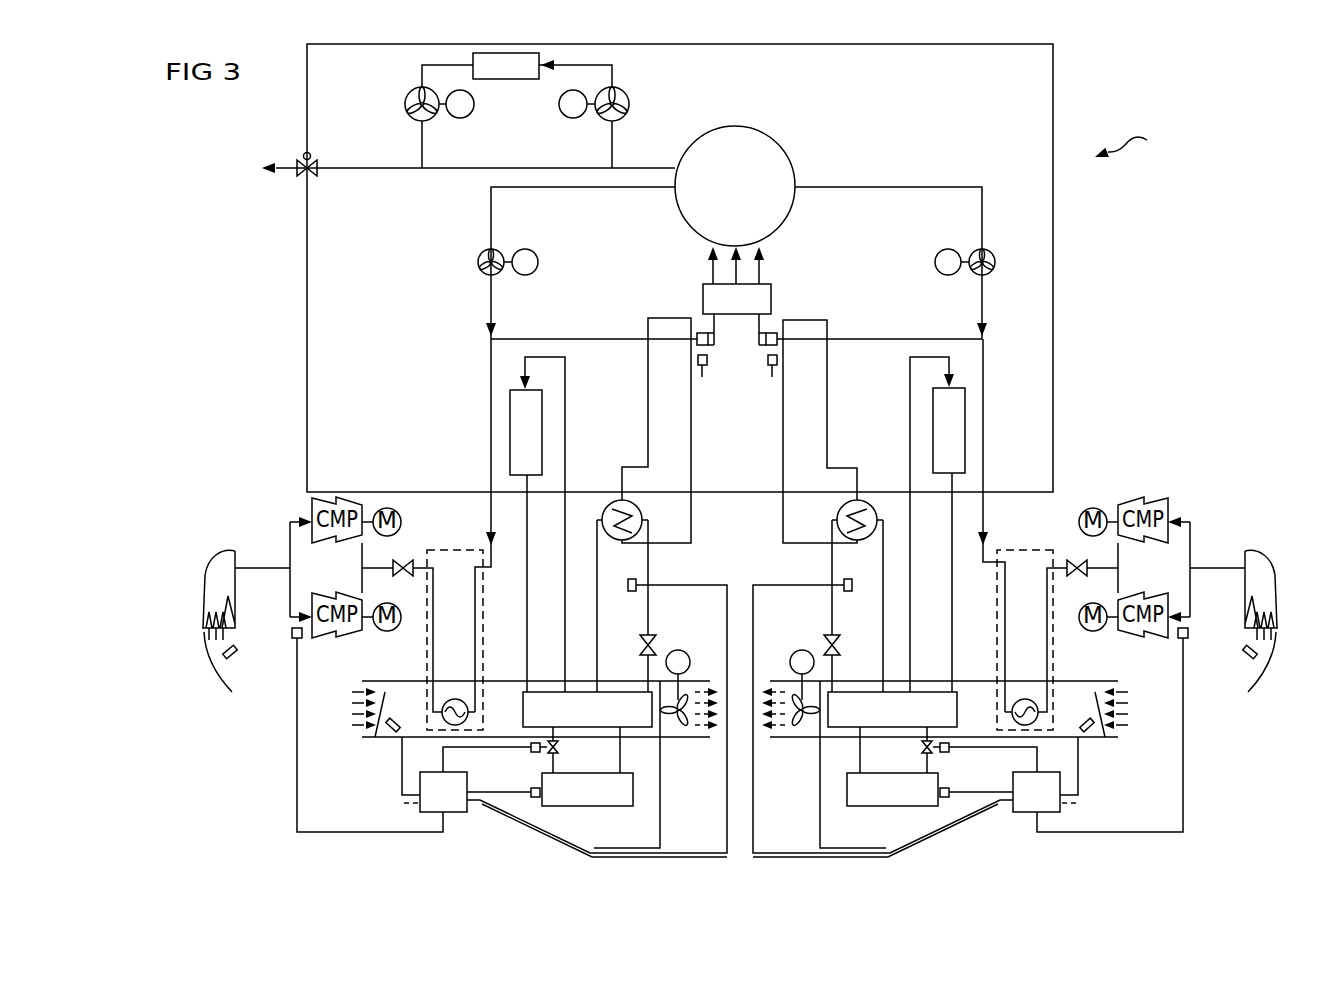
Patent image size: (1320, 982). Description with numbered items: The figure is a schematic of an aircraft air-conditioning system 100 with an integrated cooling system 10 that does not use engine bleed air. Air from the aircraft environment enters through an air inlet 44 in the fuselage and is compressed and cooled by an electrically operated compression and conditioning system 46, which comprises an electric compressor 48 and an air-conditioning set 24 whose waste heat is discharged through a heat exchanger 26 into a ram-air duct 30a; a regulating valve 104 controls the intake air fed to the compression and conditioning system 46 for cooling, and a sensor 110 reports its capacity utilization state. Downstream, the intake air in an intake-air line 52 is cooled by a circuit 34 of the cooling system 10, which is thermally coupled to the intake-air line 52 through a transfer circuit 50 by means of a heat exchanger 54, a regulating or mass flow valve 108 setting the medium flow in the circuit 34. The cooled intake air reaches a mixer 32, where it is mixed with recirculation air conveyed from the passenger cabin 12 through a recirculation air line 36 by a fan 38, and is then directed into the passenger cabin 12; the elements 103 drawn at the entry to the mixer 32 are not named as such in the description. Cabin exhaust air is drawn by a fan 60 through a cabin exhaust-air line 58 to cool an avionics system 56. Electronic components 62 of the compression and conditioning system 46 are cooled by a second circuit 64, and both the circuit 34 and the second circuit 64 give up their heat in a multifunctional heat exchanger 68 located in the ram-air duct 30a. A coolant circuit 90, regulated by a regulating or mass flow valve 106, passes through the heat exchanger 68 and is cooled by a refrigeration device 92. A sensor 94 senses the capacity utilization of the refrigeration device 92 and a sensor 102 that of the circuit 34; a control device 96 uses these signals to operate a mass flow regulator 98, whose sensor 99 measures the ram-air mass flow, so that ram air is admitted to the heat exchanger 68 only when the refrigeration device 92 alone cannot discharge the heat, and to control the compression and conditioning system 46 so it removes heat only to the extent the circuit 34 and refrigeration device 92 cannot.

The cooling system 10 is at (446, 406).
The aircraft passenger cabin 12 is at (735, 125).
The air-conditioning set 24 is at (414, 610).
The heat exchanger 26 is at (455, 698).
The ram-air duct 30a is at (693, 740).
The mixer 32 is at (772, 298).
The circuit 34 is at (608, 630).
The recirculation air line 36 is at (605, 189).
The fan 38 is at (482, 251).
The air inlet 44 is at (227, 548).
The compression and conditioning system 46 is at (368, 662).
The compressor 48 is at (290, 541).
The transfer circuit 50 is at (658, 431).
The intake-air line 52 is at (588, 337).
The heat exchanger 54 is at (612, 502).
The avionics system 56 is at (509, 80).
The cabin exhaust-air line 58 is at (644, 166).
The fan 60 is at (630, 93).
The electronic component 62 is at (509, 430).
The second circuit 64 is at (535, 590).
The multifunctional heat exchanger 68 is at (535, 665).
The coolant circuit 90 is at (573, 771).
The refrigeration device 92 is at (590, 808).
The sensor 94 is at (533, 800).
The control device 96 is at (455, 813).
The mass flow regulator 98 is at (745, 743).
The sensor 99 is at (1115, 757).
The aircraft air-conditioning system 100 is at (1133, 136).
The sensor 102 is at (648, 580).
The sensors 103 is at (708, 353).
The regulating valve 104 is at (405, 558).
The regulating or mass flow valve 106 is at (526, 752).
The regulating or mass flow valve 108 is at (655, 640).
The sensor 110 is at (291, 638).